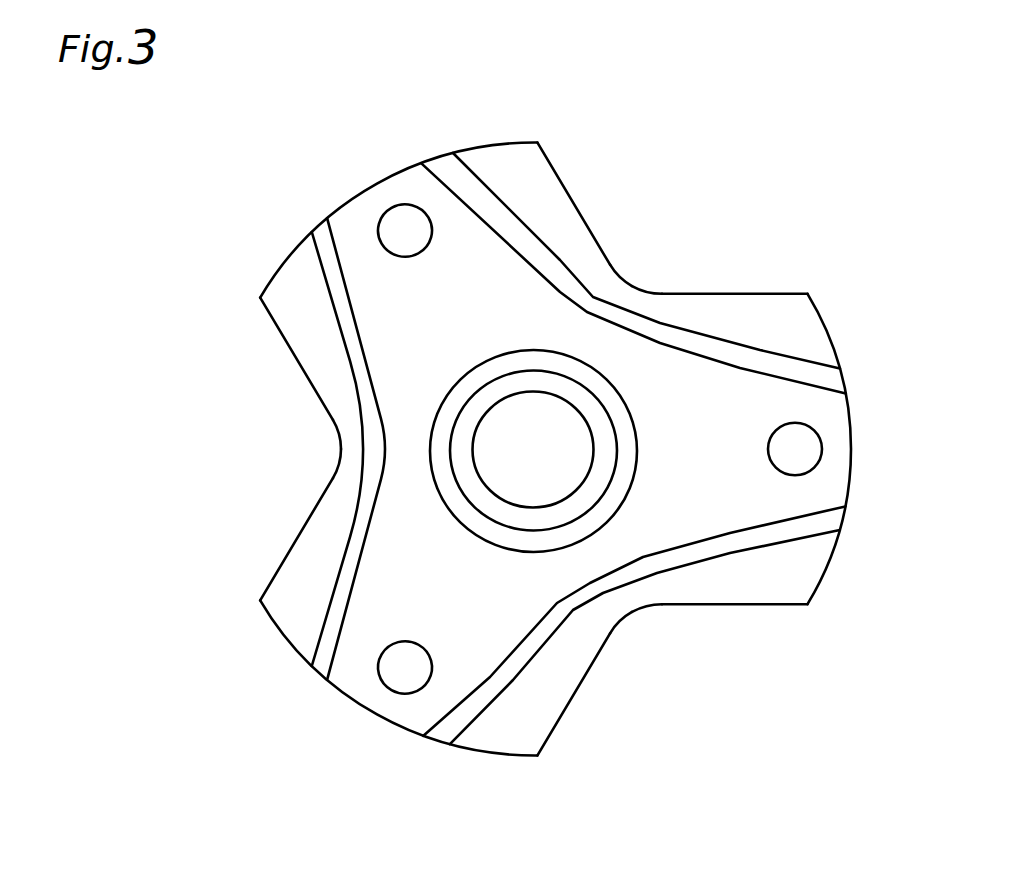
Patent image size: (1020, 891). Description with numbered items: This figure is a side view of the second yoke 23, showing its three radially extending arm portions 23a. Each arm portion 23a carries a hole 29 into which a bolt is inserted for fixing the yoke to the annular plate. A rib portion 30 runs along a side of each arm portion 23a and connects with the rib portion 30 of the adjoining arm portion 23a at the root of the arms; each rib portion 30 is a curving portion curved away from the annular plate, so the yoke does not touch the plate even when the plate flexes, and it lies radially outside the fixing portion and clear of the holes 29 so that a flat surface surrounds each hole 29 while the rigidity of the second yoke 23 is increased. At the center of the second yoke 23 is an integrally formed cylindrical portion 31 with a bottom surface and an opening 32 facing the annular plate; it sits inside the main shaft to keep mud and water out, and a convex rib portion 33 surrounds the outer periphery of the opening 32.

The second yoke 23 is at (683, 234).
The arm portion 23a is at (540, 180).
The hole 29 is at (392, 217).
The rib portion 30 is at (737, 347).
The cylindrical portion 31 is at (493, 437).
The opening 32 is at (571, 477).
The rib portion 33 is at (422, 467).